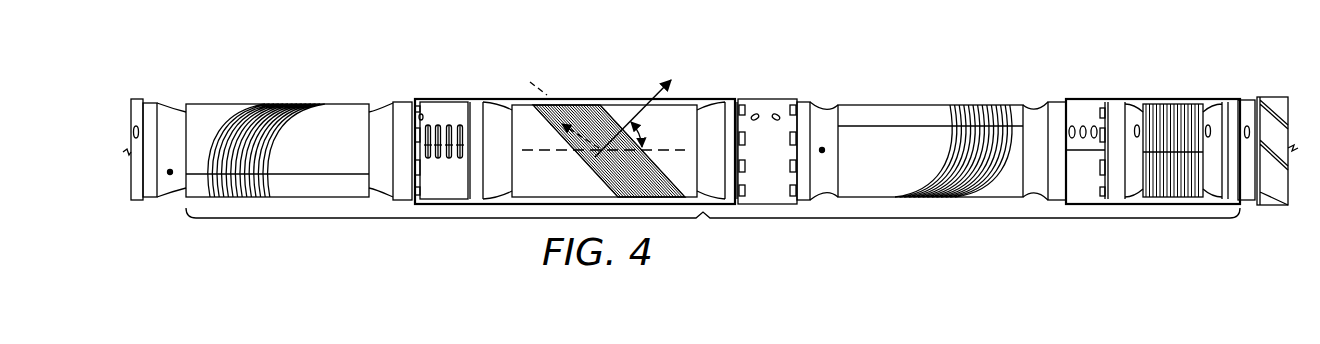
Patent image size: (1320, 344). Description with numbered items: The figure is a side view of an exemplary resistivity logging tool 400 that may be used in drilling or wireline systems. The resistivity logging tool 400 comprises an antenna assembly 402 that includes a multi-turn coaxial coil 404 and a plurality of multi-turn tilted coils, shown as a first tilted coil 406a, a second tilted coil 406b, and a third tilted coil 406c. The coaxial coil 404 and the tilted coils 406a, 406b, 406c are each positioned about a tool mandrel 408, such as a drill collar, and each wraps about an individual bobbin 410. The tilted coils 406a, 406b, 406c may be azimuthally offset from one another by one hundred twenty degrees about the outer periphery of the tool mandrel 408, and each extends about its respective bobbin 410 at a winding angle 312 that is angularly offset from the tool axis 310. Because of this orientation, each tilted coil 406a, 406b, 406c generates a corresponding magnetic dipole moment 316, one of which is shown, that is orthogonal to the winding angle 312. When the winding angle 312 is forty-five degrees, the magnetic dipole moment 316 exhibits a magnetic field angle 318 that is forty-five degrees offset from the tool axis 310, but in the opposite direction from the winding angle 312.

The resistivity logging tool 400 is at (181, 65).
The antenna assembly 402 is at (713, 229).
The multi-turn coaxial coil 404 is at (1190, 103).
The first tilted coil 406a is at (273, 104).
The second tilted coil 406b is at (582, 105).
The third tilted coil 406c is at (963, 105).
The tool mandrel 408 is at (763, 99).
The bobbins 410 is at (354, 104).
The tool axis 310 is at (683, 150).
The winding angle 312 is at (556, 140).
The magnetic dipole moment 316 is at (657, 78).
The magnetic field angle 318 is at (641, 136).